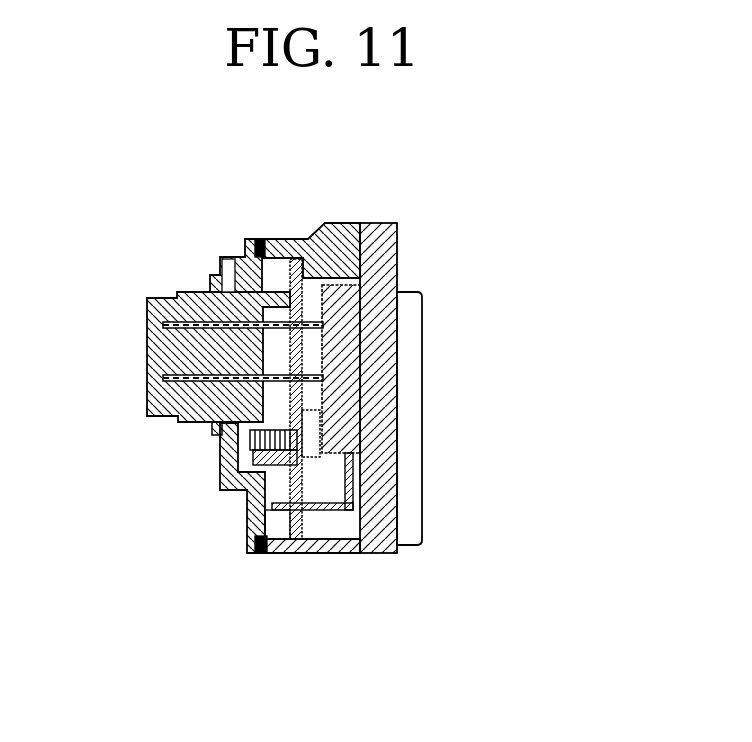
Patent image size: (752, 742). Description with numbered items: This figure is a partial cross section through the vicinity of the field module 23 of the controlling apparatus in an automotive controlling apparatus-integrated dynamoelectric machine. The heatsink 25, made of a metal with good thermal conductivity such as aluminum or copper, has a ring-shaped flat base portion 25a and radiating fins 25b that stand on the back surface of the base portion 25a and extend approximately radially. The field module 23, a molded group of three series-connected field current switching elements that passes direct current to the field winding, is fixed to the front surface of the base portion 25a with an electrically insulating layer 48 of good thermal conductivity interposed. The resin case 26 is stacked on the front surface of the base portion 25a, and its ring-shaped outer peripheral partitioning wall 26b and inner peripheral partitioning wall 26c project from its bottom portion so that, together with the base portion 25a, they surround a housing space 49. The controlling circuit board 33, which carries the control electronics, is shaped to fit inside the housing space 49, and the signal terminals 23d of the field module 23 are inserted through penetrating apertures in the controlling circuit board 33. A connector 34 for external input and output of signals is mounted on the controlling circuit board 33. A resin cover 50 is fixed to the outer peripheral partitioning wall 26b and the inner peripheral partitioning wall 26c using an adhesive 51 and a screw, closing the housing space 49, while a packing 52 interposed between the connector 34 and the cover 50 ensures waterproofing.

The connector 34 is at (147, 297).
The adhesive 51 is at (258, 238).
The outer peripheral partitioning wall 26b is at (334, 224).
The resin case 26 is at (320, 421).
The heatsink 25 is at (446, 386).
The electrically insulating layer 48 is at (393, 311).
The field module 23 is at (352, 357).
The base portion 25a is at (387, 438).
The radiating fins 25b is at (412, 490).
The packing 52 is at (212, 430).
The resin cover 50 is at (277, 523).
The housing space 49 is at (248, 488).
The controlling circuit board 33 is at (291, 556).
The signal terminals 23d is at (330, 516).
The inner peripheral partitioning wall 26c is at (316, 554).